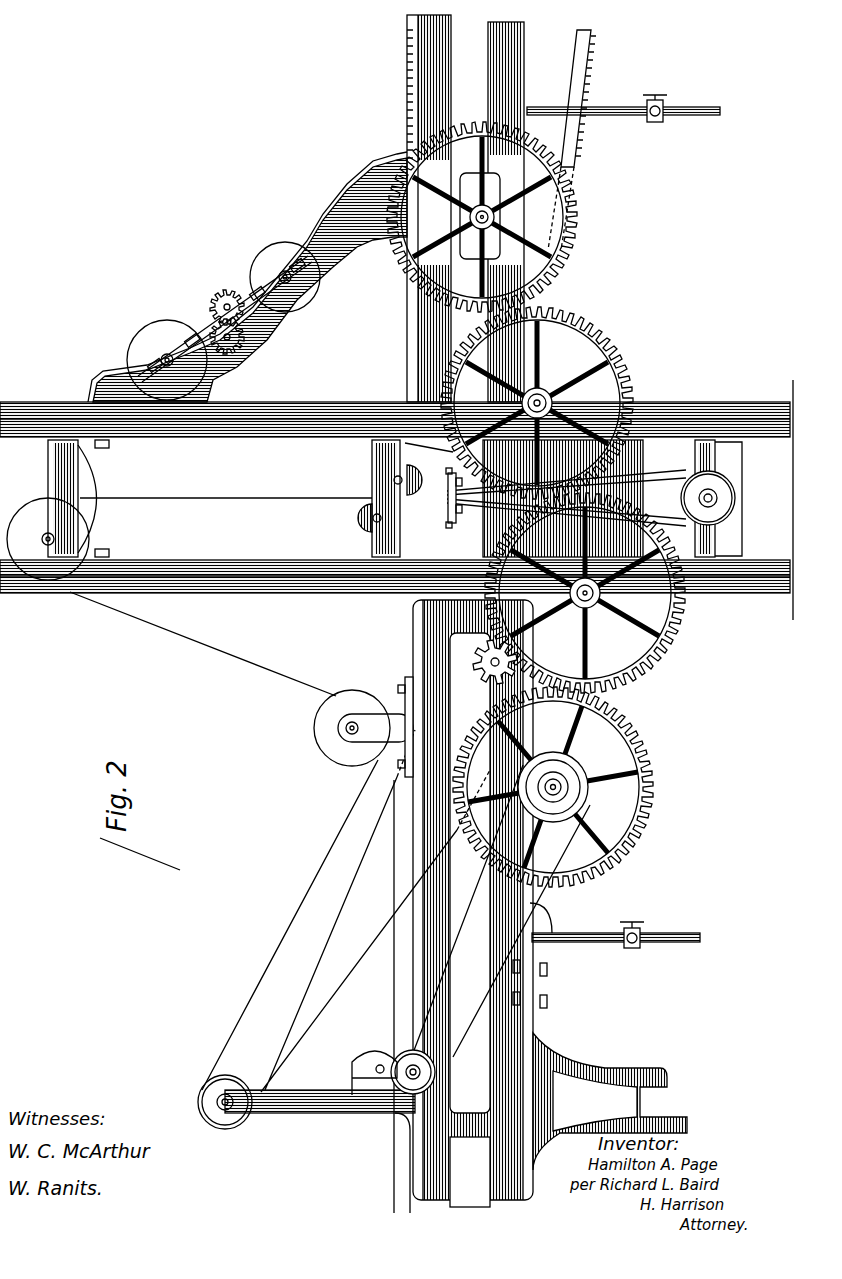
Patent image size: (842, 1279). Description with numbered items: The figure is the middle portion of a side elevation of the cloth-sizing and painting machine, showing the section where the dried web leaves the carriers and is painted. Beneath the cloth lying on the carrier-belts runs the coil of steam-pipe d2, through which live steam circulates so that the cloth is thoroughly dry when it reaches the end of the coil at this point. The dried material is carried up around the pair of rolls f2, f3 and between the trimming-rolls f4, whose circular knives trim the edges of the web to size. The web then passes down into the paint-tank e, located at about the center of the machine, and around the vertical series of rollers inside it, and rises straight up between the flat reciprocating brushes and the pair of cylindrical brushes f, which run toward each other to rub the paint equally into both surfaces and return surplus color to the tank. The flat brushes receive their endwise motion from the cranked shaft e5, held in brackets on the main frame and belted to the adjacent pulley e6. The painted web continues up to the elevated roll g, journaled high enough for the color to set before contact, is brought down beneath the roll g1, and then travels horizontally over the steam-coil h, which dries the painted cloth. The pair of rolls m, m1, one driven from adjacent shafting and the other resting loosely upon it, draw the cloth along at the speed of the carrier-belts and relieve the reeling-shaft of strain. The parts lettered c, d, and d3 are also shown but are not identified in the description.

The gear wheel c is at (482, 217).
The tilted rack bar d is at (569, 140).
The coil of steam-pipe d2 is at (623, 101).
The rack teeth d3 is at (593, 96).
The paint-tank e is at (485, 540).
The cranked shaft e5 is at (445, 498).
The pulley e6 is at (696, 498).
The cylindrical brushes f is at (384, 498).
The roll f2 is at (285, 261).
The roll f3 is at (180, 337).
The trimming-rolls f4 is at (227, 292).
The roll g is at (48, 539).
The roll g1 is at (363, 727).
The roll m is at (413, 1072).
The roll m1 is at (374, 1052).
The steam-coil h is at (615, 925).